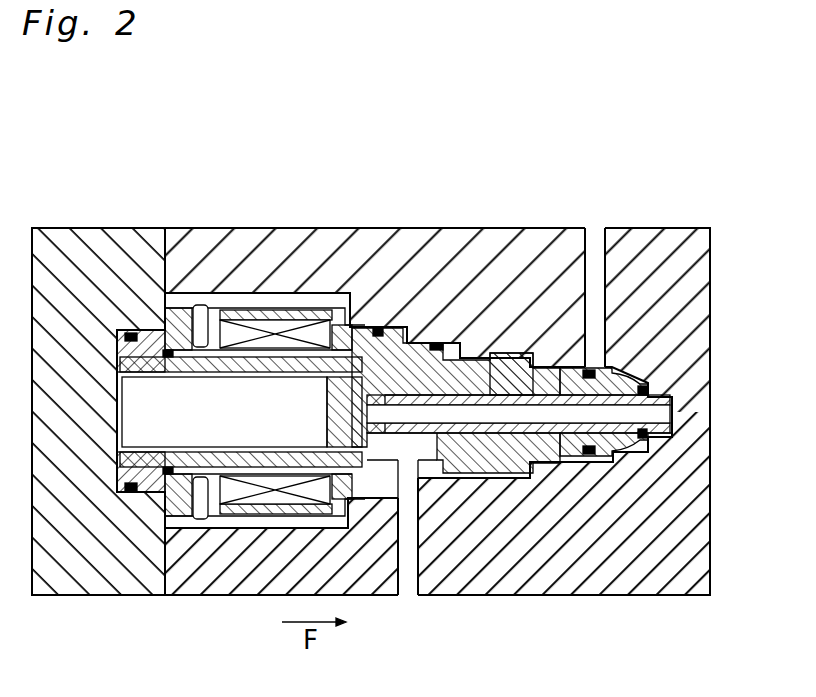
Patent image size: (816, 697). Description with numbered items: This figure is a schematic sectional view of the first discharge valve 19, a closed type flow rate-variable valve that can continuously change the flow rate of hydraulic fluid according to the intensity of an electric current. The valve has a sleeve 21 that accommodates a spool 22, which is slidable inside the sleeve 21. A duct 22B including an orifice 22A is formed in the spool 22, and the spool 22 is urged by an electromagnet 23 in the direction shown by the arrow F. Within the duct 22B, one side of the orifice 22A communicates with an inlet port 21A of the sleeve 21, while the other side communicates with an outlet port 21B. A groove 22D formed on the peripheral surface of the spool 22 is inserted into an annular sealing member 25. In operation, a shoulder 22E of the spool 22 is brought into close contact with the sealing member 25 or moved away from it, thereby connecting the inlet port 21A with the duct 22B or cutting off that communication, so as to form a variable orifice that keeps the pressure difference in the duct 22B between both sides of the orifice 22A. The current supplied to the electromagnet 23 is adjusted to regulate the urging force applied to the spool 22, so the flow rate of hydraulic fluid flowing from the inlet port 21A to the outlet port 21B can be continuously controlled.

The first discharge valve 19 is at (436, 412).
The sleeve 21 is at (677, 247).
The inlet port 21A is at (589, 232).
The outlet port 21B is at (408, 594).
The spool 22 is at (437, 348).
The orifice 22A is at (518, 434).
The duct 22B is at (492, 360).
The groove 22D is at (630, 450).
The shoulder 22E is at (658, 438).
The electromagnet 23 is at (273, 330).
The annular sealing member 25 is at (647, 372).